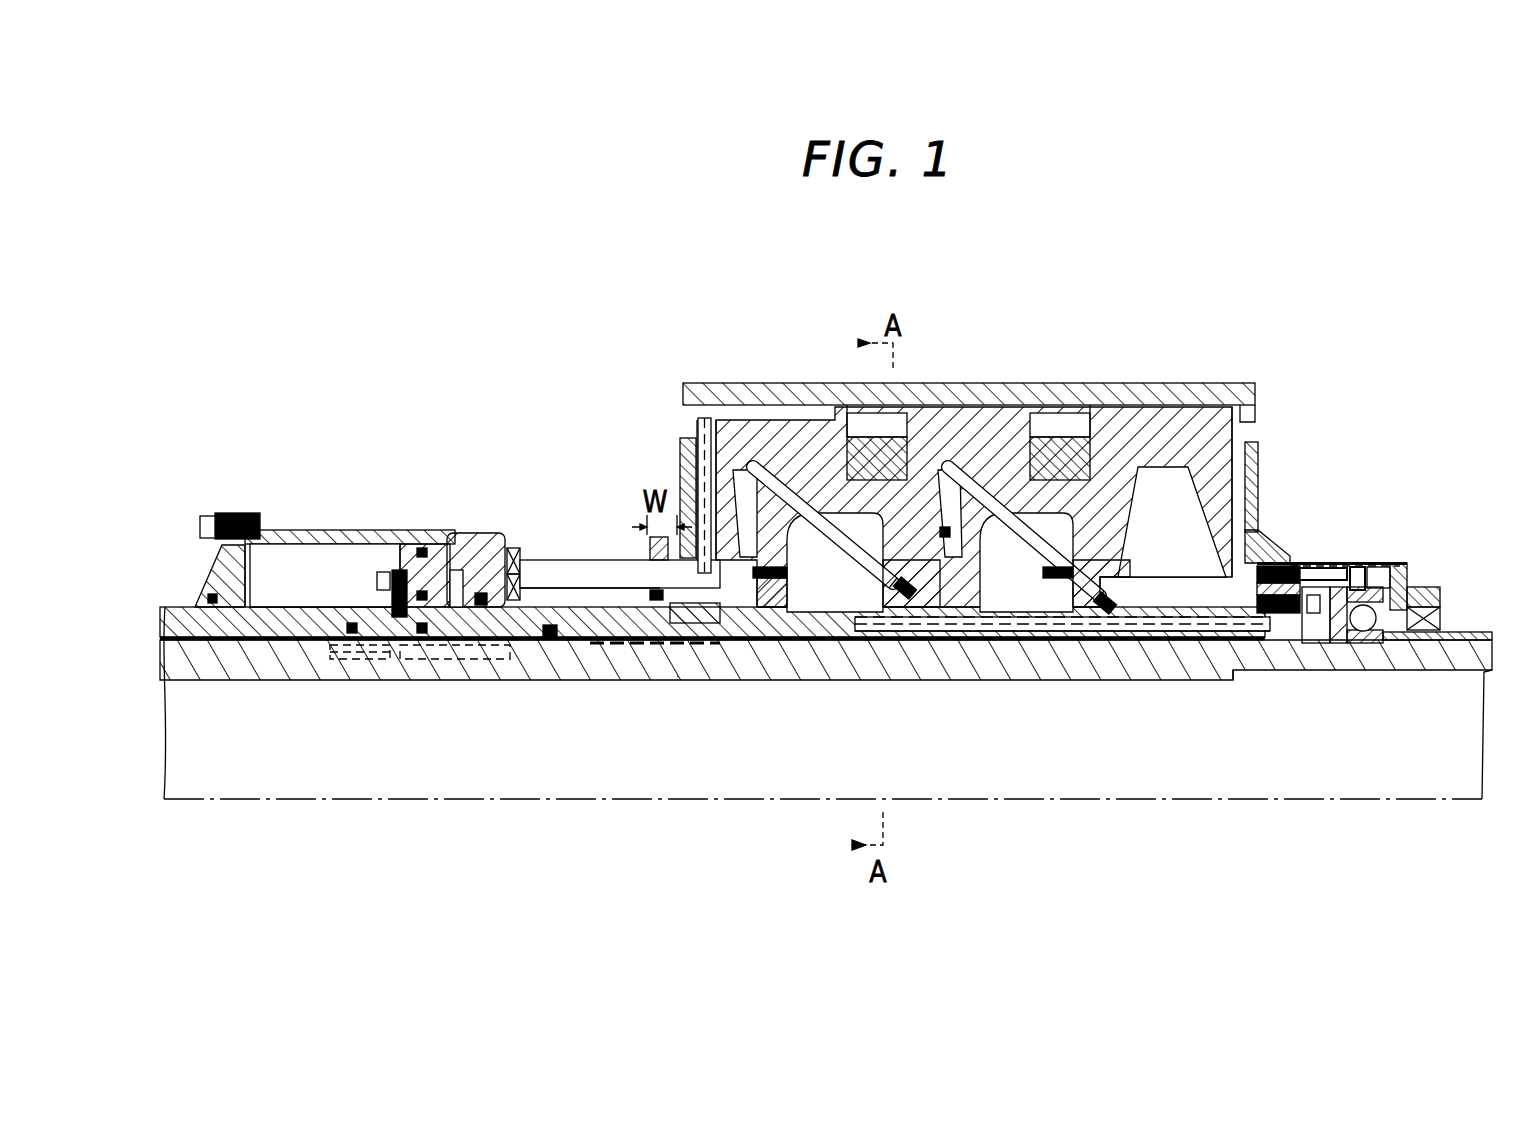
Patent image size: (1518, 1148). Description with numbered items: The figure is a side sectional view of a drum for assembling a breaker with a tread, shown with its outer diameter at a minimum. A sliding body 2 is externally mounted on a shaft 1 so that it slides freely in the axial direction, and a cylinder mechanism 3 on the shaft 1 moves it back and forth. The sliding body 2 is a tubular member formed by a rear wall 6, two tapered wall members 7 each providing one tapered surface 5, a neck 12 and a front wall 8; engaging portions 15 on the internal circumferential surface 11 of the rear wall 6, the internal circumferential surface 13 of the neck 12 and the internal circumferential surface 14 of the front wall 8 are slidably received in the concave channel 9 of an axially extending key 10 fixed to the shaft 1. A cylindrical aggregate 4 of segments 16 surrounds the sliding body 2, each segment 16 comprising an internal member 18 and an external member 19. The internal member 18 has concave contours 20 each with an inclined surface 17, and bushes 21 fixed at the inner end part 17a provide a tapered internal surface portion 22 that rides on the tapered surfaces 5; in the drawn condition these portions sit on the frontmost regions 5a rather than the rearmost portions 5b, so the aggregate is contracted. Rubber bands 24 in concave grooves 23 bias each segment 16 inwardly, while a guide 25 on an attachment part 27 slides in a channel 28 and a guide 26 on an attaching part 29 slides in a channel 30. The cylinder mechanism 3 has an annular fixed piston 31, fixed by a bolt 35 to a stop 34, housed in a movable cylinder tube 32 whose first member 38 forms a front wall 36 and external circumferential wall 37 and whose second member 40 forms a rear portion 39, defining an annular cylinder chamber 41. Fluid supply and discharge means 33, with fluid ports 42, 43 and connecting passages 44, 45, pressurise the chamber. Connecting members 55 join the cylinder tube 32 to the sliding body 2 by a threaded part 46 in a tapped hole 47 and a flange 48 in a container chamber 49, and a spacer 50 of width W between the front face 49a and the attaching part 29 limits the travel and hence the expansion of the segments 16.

The shaft 1 is at (595, 558).
The sliding body 2 is at (1027, 387).
The cylinder mechanism 3 is at (410, 523).
The cylindrical aggregate 4 is at (1158, 383).
The tapered surfaces 5 is at (850, 440).
The frontmost regions of tapered surfaces 5a is at (935, 640).
The rearmost portions of tapered surfaces 5b is at (796, 470).
The rear wall 6 is at (807, 640).
The tapered wall members 7 is at (977, 387).
The front wall 8 is at (1138, 640).
The concave channel 9 is at (1245, 547).
The key 10 is at (1267, 667).
The internal circumferential surface of rear wall 11 is at (800, 640).
The neck 12 is at (1007, 642).
The internal circumferential surface of neck 13 is at (983, 640).
The internal circumferential surface of front wall 14 is at (1133, 640).
The engaging portions 15 is at (750, 640).
The segment 16 is at (1225, 383).
The inclined surface 17 is at (800, 470).
The inner end part of inclined contour 17a is at (840, 640).
The internal member 18 is at (1260, 445).
The external member 19 is at (947, 387).
The concave contours 20 is at (770, 560).
The bearings or bushes 21 is at (915, 640).
The tapered internal surface portion 22 is at (873, 640).
The concave grooves 23 is at (880, 437).
The rubber bands 24 is at (950, 420).
The guide 25 is at (1260, 503).
The guide 26 is at (700, 418).
The attachment part 27 is at (1290, 547).
The channel 28 is at (1262, 470).
The attaching part 29 is at (680, 440).
The channel 30 is at (720, 420).
The fixed piston 31 is at (443, 528).
The cylinder tube 32 is at (357, 520).
The fluid supply and discharge means 33 is at (460, 640).
The stop 34 is at (327, 528).
The bolt 35 is at (382, 560).
The front wall 36 is at (498, 528).
The external circumferential wall 37 is at (287, 528).
The first member 38 is at (480, 527).
The rear portion 39 is at (198, 590).
The second member 40 is at (205, 545).
The annular cylinder chamber 41 is at (310, 528).
The fluid port 42 is at (483, 640).
The fluid port 43 is at (372, 650).
The connecting passage 44 is at (440, 640).
The connecting passage 45 is at (355, 645).
The threaded part 46 is at (720, 625).
The tapped hole 47 is at (690, 625).
The flange 48 is at (560, 640).
The container chamber 49 is at (513, 610).
The front face of container chamber 49a is at (520, 560).
The spacer 50 is at (655, 562).
The connecting member 55 is at (618, 555).